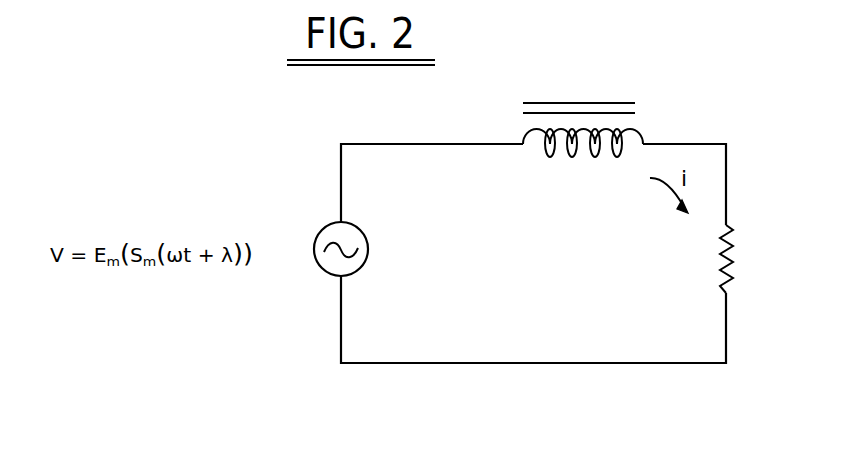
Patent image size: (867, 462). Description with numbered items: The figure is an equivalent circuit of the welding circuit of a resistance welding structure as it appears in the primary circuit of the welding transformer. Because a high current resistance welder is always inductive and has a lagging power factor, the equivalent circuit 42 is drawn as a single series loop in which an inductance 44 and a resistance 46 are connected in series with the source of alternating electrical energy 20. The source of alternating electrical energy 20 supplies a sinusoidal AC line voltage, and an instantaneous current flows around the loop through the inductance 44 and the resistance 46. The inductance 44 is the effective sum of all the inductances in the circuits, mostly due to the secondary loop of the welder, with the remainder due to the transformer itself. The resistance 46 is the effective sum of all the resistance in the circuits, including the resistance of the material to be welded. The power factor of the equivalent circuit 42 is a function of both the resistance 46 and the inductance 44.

The source of alternating electrical energy 20 is at (368, 247).
The equivalent circuit 42 is at (306, 322).
The inductance 44 is at (573, 157).
The resistance 46 is at (720, 270).